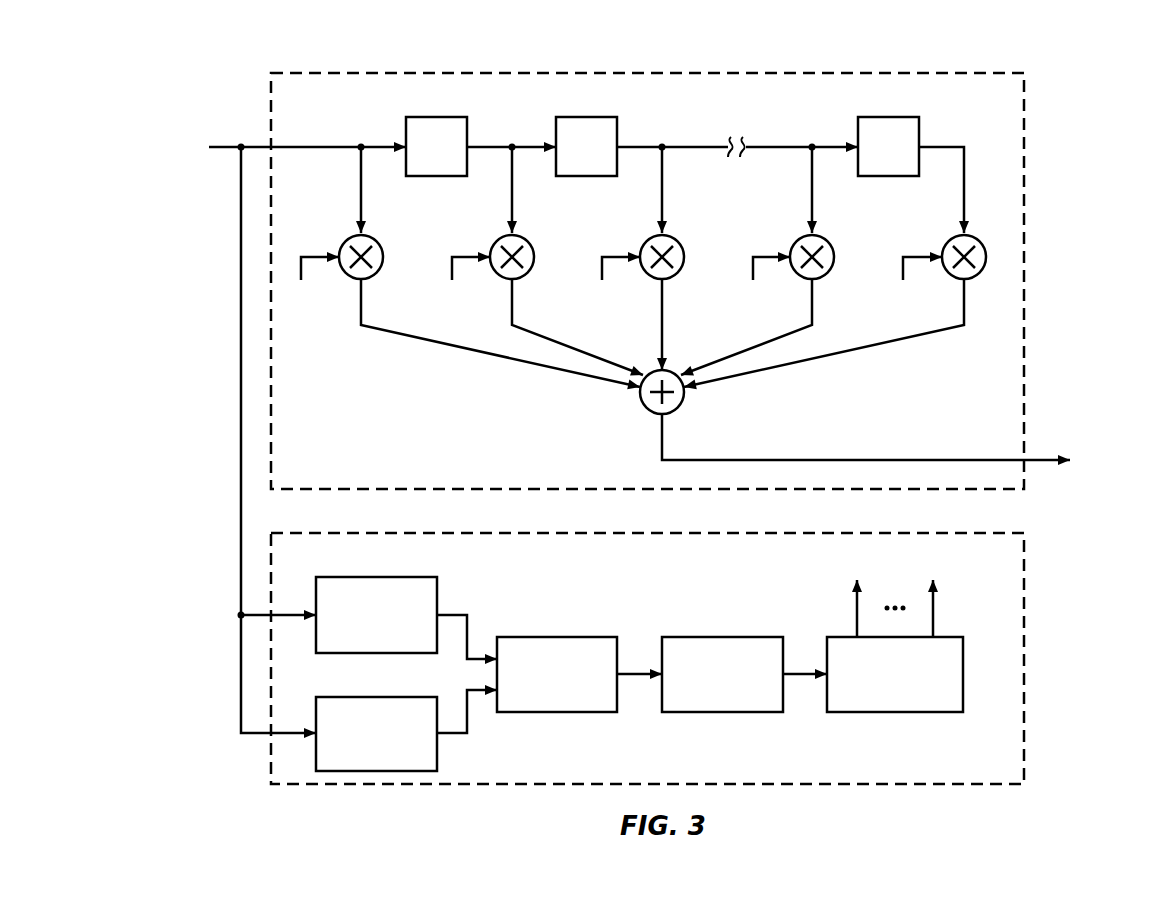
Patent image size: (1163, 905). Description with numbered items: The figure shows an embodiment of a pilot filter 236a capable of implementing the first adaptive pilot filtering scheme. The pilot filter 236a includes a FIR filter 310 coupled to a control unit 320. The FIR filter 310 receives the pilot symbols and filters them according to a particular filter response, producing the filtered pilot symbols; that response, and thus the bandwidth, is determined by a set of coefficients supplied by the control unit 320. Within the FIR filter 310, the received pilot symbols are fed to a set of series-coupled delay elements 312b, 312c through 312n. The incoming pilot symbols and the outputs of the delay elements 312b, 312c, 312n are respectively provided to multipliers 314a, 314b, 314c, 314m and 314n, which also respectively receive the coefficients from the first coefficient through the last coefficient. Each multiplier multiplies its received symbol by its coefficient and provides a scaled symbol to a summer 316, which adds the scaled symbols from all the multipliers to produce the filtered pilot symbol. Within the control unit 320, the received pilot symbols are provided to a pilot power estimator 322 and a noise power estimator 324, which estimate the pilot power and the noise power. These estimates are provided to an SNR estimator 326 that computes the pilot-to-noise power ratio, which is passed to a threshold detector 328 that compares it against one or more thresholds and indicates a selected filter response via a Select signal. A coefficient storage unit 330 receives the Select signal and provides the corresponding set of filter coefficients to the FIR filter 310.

The pilot filter 236a is at (1093, 67).
The FIR filter 310 is at (1025, 312).
The delay element 312b is at (430, 117).
The delay element 312c is at (580, 117).
The delay element 312n is at (882, 117).
The multiplier 314a is at (393, 236).
The multiplier 314b is at (544, 236).
The multiplier 314c is at (694, 236).
The multiplier 314m is at (844, 236).
The multiplier 314n is at (996, 236).
The summer 316 is at (677, 408).
The control unit 320 is at (1025, 668).
The pilot power estimator 322 is at (371, 577).
The noise power estimator 324 is at (371, 697).
The SNR estimator 326 is at (551, 637).
The threshold detector 328 is at (717, 637).
The coefficient storage unit 330 is at (952, 637).